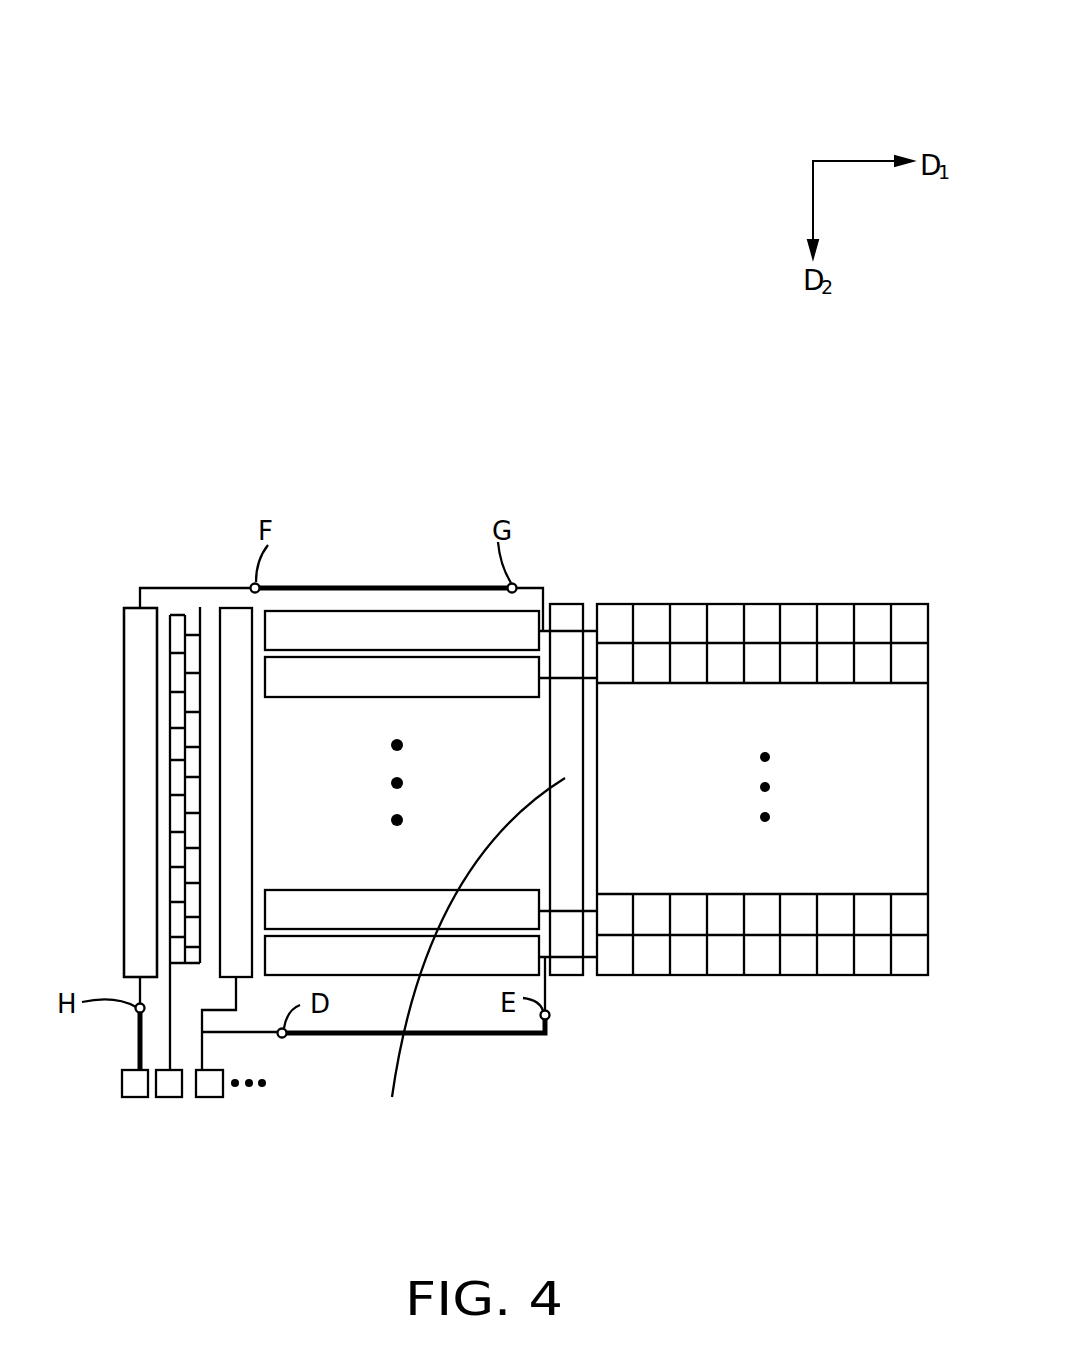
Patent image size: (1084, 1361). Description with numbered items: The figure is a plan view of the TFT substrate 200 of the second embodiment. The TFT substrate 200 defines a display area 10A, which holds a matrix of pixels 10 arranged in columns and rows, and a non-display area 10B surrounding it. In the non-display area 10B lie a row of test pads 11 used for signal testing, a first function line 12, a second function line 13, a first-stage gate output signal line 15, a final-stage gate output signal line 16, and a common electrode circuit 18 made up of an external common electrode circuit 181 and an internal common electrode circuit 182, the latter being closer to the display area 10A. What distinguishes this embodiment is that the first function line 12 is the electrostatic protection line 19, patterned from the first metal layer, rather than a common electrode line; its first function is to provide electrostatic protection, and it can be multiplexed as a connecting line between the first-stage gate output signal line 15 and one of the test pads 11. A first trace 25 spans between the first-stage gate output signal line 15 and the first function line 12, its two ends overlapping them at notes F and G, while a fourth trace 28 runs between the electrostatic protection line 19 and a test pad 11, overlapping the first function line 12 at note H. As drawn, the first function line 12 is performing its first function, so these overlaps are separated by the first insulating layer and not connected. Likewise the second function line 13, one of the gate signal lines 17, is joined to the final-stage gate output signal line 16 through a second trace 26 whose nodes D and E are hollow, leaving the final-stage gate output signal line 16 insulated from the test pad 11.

The TFT substrate 200 is at (540, 35).
The pixels 10 is at (907, 618).
The display area 10A is at (746, 494).
The non-display area 10B is at (378, 456).
The test pads 11 is at (207, 1085).
The first function line 12 is at (151, 781).
The electrostatic protection line 19 is at (132, 650).
The second function line 13 is at (236, 883).
The gate signal lines 17 is at (215, 1035).
The first-stage gate output signal line 15 is at (531, 587).
The final-stage gate output signal line 16 is at (549, 987).
The common electrode circuit 18 is at (422, 1148).
The external common electrode circuit 181 is at (185, 947).
The internal common electrode circuit 182 is at (466, 962).
The first trace 25 is at (363, 586).
The second trace 26 is at (458, 1036).
The fourth trace 28 is at (138, 1040).